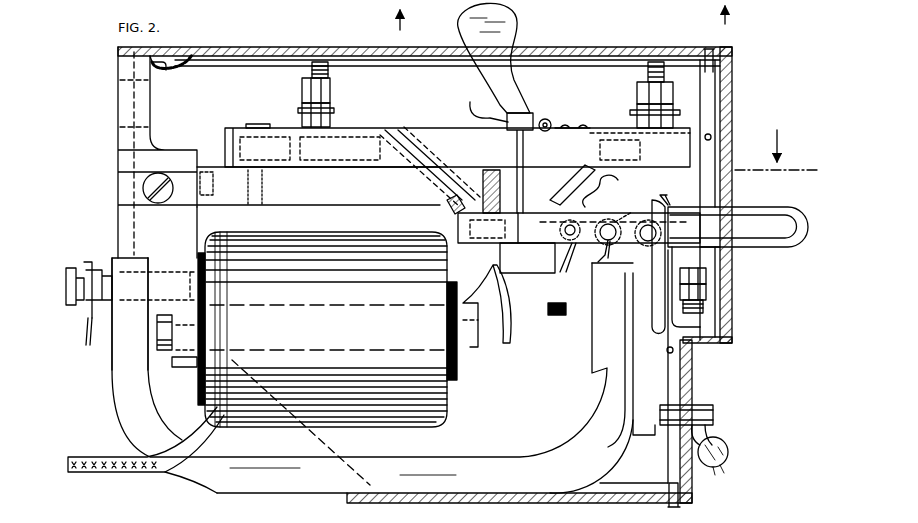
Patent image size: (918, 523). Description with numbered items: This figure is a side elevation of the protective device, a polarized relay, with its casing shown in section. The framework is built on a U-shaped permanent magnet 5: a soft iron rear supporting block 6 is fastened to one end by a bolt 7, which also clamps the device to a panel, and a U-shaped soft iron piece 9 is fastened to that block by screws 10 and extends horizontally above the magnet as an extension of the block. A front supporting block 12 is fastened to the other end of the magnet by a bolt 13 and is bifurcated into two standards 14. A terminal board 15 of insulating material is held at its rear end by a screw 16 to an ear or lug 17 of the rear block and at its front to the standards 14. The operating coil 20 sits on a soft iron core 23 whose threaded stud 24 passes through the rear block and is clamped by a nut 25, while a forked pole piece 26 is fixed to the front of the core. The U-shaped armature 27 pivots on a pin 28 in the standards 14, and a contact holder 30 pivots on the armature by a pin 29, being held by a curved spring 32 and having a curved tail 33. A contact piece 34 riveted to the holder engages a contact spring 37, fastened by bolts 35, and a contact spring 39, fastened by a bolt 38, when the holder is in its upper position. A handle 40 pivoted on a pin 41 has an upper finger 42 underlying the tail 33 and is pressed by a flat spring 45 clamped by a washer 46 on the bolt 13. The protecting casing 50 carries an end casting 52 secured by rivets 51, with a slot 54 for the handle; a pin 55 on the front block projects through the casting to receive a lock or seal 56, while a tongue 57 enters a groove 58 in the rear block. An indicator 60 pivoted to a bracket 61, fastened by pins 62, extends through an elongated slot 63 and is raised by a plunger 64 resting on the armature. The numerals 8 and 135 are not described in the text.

The permanent magnet 5 is at (340, 473).
The rear supporting block 6 is at (118, 98).
The bolt 7 is at (125, 285).
The contact block 8 is at (527, 195).
The U-shaped soft iron piece 9 is at (318, 212).
The screws 10 is at (143, 186).
The front supporting block 12 is at (640, 337).
The bolt 13 is at (708, 302).
The standards 14 is at (670, 200).
The terminal board 15 is at (418, 130).
The screw 16 is at (262, 128).
The ear or lug 17 is at (208, 187).
The coil 20 is at (450, 406).
The soft iron core 23 is at (288, 352).
The threaded stud 24 is at (186, 350).
The nut 25 is at (160, 352).
The forked pole piece 26 is at (494, 280).
The armature 27 is at (609, 228).
The pin 28 is at (640, 243).
The pin 29 is at (601, 259).
The contact holder 30 is at (533, 258).
The curved spring 32 is at (580, 272).
The curved tail 33 is at (596, 193).
The contact piece 34 is at (458, 228).
The bolts 35 is at (334, 112).
The contact spring 37 is at (417, 152).
The bolt 38 is at (640, 96).
The contact spring 39 is at (580, 146).
The handle 40 is at (738, 227).
The pin 41 is at (648, 258).
The upper finger 42 is at (620, 214).
The flat spring 45 is at (694, 365).
The washer 46 is at (680, 321).
The protecting casing 50 is at (252, 47).
The rivets 51 is at (712, 136).
The end casting 52 is at (735, 85).
The slot 54 is at (723, 258).
The pin 55 is at (714, 410).
The lock or seal 56 is at (727, 450).
The tongue 57 is at (160, 66).
The groove 58 is at (118, 58).
The indicator 60 is at (512, 28).
The bracket 61 is at (549, 120).
The pins 62 is at (575, 126).
The elongated slot 63 is at (462, 60).
The plunger 64 is at (488, 108).
The cord 135 is at (103, 474).